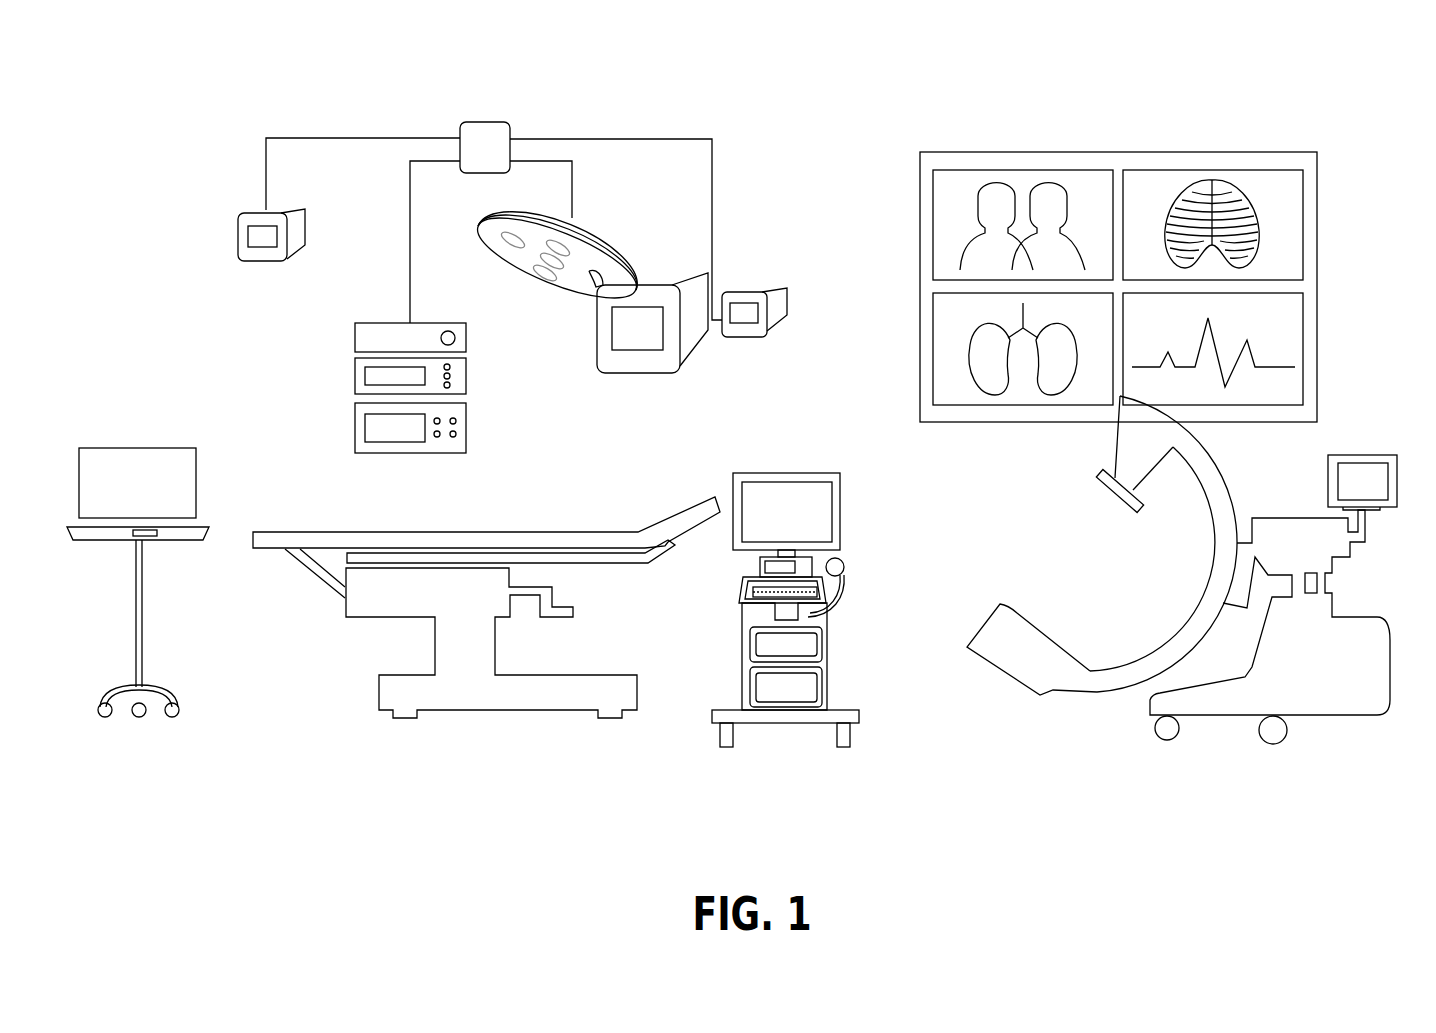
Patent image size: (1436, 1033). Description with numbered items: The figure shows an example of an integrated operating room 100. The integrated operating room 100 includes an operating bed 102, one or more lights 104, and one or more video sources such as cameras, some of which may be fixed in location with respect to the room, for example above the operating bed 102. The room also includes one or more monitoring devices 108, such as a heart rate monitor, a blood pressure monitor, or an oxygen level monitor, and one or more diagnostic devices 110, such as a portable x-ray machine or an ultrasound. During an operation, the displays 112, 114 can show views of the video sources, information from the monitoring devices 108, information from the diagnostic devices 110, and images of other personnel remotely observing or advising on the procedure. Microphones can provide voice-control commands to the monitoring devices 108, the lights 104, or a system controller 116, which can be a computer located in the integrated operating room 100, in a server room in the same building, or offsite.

The integrated operating room 100 is at (1349, 69).
The operating bed 102 is at (500, 710).
The lights 104 is at (485, 215).
The monitoring devices 108 is at (355, 360).
The diagnostic devices 110 is at (1017, 612).
The display 112 is at (1000, 152).
The display 114 is at (182, 447).
The system controller 116 is at (840, 473).